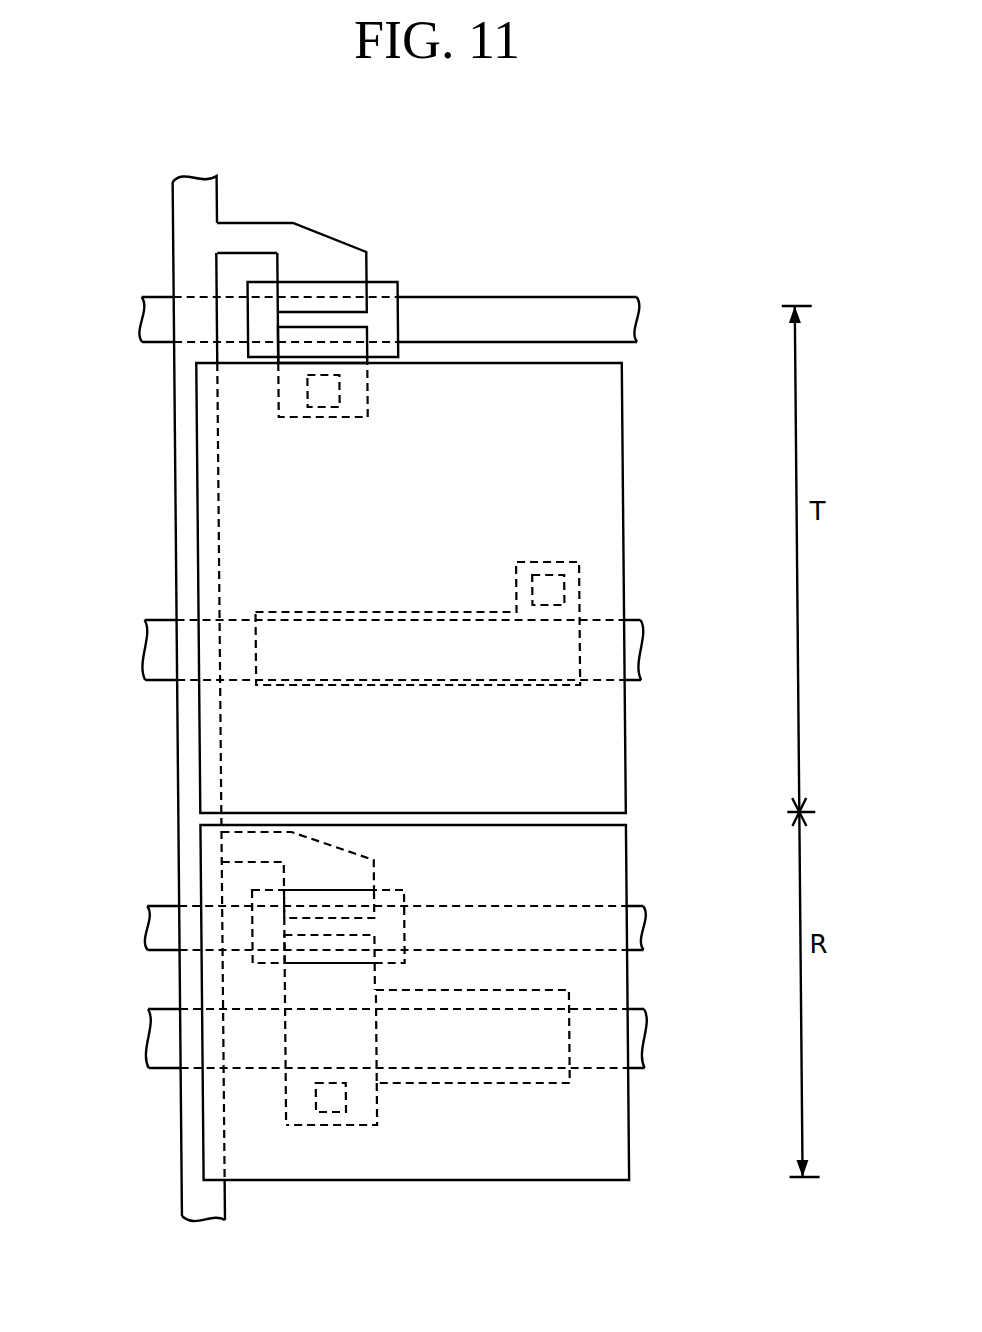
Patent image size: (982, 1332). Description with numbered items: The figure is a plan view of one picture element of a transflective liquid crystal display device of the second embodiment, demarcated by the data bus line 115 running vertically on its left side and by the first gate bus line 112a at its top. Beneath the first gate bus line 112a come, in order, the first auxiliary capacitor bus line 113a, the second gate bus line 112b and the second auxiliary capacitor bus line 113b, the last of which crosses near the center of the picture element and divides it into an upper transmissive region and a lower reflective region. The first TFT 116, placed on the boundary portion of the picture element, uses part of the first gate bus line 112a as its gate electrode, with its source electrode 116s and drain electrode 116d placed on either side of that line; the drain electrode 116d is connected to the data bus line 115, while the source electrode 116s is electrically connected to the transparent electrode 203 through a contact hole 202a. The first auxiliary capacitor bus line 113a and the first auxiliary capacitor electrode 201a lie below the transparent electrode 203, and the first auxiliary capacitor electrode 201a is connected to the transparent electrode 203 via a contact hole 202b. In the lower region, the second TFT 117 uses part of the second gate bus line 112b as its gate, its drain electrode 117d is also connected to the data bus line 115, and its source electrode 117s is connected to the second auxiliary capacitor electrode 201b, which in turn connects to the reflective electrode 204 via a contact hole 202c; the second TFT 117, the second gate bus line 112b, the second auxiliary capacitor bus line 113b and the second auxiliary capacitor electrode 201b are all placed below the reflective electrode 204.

The data bus line 115 is at (182, 221).
The first TFT 116 is at (343, 318).
The drain electrode 116d is at (289, 238).
The source electrode 116s is at (290, 418).
The first gate bus line 112a is at (150, 297).
The first auxiliary capacitor bus line 113a is at (150, 620).
The first auxiliary capacitor electrode 201a is at (402, 607).
The contact hole 202a is at (323, 387).
The contact hole 202b is at (542, 561).
The transparent electrode 203 is at (606, 484).
The second TFT 117 is at (378, 943).
The drain electrode 117d is at (323, 853).
The source electrode 117s is at (380, 984).
The second gate bus line 112b is at (152, 906).
The second auxiliary capacitor bus line 113b is at (152, 1009).
The second auxiliary capacitor electrode 201b is at (483, 1084).
The contact hole 202c is at (341, 1132).
The reflective electrode 204 is at (608, 870).